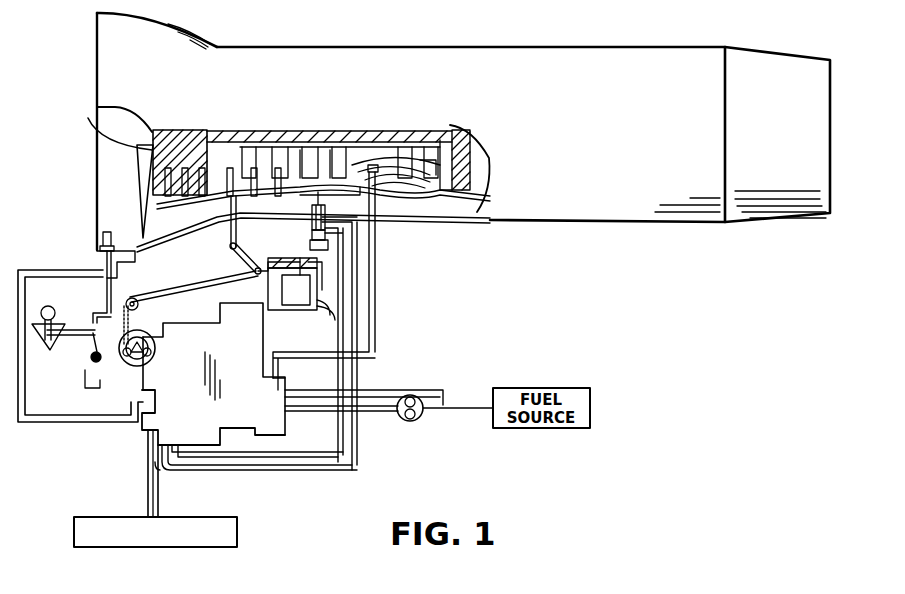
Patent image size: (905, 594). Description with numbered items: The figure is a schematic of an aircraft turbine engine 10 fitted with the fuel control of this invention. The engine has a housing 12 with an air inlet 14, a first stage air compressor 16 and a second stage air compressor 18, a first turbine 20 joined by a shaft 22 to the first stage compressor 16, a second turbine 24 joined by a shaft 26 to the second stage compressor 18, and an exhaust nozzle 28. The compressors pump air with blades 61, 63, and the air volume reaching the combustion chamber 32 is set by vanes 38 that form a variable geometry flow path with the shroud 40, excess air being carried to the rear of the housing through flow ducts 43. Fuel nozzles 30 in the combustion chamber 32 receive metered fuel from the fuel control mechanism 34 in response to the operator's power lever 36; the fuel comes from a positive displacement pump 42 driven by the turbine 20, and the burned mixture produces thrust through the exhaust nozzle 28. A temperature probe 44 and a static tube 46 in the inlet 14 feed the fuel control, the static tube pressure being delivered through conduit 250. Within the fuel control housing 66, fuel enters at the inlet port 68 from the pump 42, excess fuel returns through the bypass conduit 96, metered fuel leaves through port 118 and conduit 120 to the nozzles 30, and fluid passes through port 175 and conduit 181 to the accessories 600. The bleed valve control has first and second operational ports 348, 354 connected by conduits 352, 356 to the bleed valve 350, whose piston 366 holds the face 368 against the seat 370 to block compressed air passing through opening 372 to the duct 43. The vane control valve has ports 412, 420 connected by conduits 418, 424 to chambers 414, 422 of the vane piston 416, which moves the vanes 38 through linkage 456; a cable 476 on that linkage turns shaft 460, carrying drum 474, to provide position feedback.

The turbine engine 10 is at (739, 272).
The housing 12 is at (149, 46).
The air inlet 14 is at (110, 180).
The first stage air compressor 16 is at (195, 140).
The second stage air compressor 18 is at (290, 150).
The first turbine 20 is at (462, 152).
The shaft 22 is at (386, 140).
The second turbine 24 is at (445, 215).
The shaft 26 is at (405, 162).
The exhaust nozzle 28 is at (780, 182).
The fuel nozzles 30 is at (392, 188).
The combustion chamber 32 is at (415, 165).
The fuel control mechanism 34 is at (120, 482).
The power lever 36 is at (58, 318).
The vanes 38 is at (245, 222).
The shroud 40 is at (367, 150).
The positive displacement pump 42 is at (418, 418).
The flow ducts 43 is at (303, 211).
The temperature probe 44 is at (100, 247).
The static tube 46 is at (140, 258).
The blades 61 is at (186, 204).
The blades 63 is at (265, 165).
The housing 66 is at (100, 388).
The inlet port 68 is at (290, 413).
The bypass conduit 96 is at (425, 390).
The port 118 is at (278, 370).
The conduit 120 is at (377, 313).
The port 175 is at (143, 437).
The conduit 181 is at (145, 458).
The conduit 250 is at (70, 392).
The first operational port 348 is at (190, 445).
The bleed valve 350 is at (293, 235).
The conduit 352 is at (337, 432).
The second operational port 354 is at (168, 460).
The conduit 356 is at (290, 475).
The piston 366 is at (306, 250).
The face 368 is at (332, 202).
The seat 370 is at (302, 160).
The opening 372 is at (330, 168).
The port 412 is at (265, 348).
The chamber 414 is at (313, 285).
The vane piston 416 is at (274, 257).
The conduit 418 is at (319, 321).
The port 420 is at (214, 369).
The chamber 422 is at (268, 268).
The conduit 424 is at (292, 289).
The linkage 456 is at (240, 290).
The shaft 460 is at (150, 333).
The drum 474 is at (156, 345).
The cable 476 is at (190, 290).
The accessories 600 is at (107, 547).